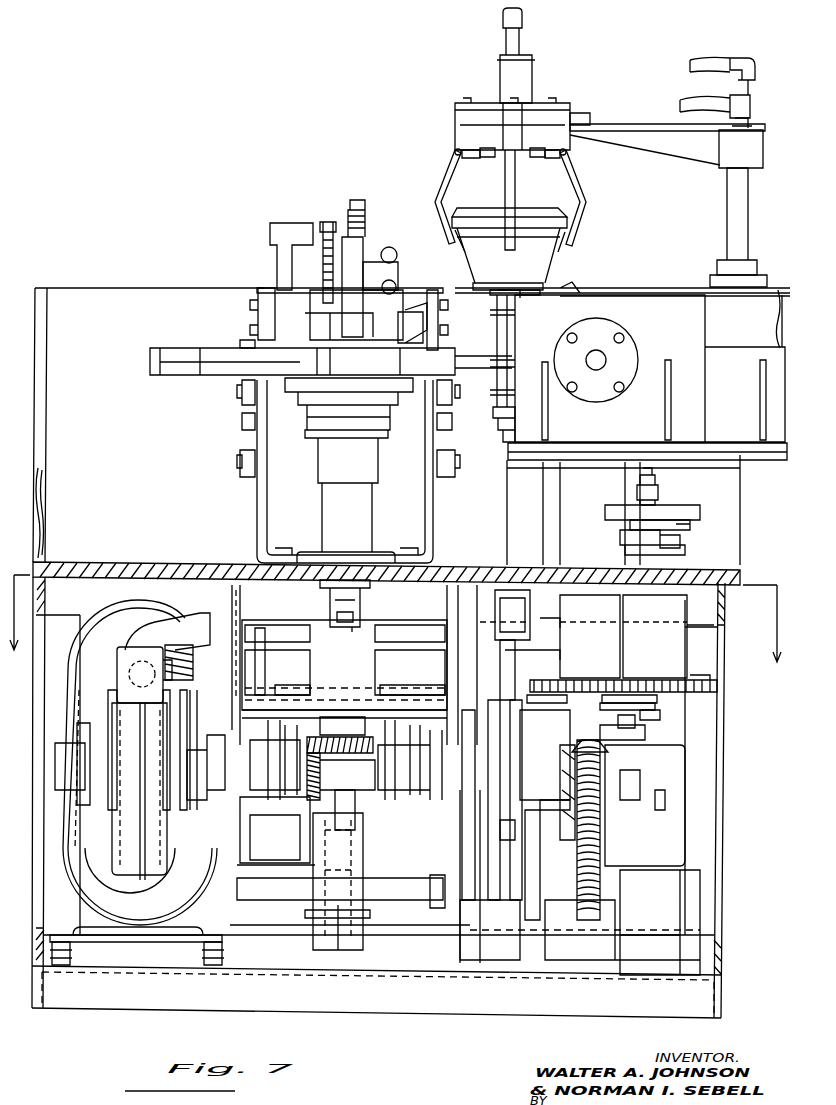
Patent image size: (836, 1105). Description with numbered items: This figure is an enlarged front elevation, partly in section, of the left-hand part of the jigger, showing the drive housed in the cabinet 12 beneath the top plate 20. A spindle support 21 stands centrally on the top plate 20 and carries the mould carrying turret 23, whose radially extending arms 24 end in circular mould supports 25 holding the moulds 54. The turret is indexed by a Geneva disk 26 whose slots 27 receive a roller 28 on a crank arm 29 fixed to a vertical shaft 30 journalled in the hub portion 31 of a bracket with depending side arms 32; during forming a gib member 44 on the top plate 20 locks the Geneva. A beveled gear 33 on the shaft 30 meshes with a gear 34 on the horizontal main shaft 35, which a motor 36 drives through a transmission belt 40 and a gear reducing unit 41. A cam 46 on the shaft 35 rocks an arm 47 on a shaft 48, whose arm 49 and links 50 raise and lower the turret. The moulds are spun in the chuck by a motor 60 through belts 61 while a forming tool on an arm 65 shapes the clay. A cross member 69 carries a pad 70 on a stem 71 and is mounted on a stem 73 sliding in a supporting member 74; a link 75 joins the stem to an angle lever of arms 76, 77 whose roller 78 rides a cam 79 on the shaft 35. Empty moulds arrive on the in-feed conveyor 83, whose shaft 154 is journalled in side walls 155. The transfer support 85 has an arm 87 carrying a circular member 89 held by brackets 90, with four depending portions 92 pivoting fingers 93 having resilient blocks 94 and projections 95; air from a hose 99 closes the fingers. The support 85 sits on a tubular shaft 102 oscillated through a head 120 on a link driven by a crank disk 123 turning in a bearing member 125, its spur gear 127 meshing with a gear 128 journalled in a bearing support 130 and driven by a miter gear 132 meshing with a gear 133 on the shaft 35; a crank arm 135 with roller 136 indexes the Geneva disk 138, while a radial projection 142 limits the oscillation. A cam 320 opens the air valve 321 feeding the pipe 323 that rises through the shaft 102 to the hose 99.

The machine housing 12 is at (393, 796).
The top plate 20 is at (216, 560).
The spindle support 21 is at (348, 470).
The mould carrying turret 23 is at (336, 382).
The radially extending arms 24 is at (244, 348).
The circular mould supports 25 is at (150, 368).
The Geneva disk 26 is at (292, 682).
The slots 27 is at (412, 682).
The roller 28 is at (344, 627).
The crank arm 29 is at (361, 602).
The shaft 30 is at (346, 760).
The hub portion 31 is at (344, 665).
The side arms 32 is at (478, 662).
The beveled gear 33 is at (344, 731).
The gear 34 is at (275, 830).
The shaft 35 is at (226, 765).
The motor 36 is at (137, 906).
The transmission belt 40 is at (78, 808).
The gear reducing unit 41 is at (114, 674).
The gib member 44 is at (254, 658).
The cam 46 is at (480, 716).
The arm 47 is at (504, 864).
The shaft 48 is at (358, 876).
The arm 49 is at (361, 914).
The links 50 is at (362, 945).
The moulds 54 is at (509, 249).
The motor 60 is at (631, 830).
The belts 61 is at (548, 632).
The arm 65 is at (368, 252).
The cross member 69 is at (493, 415).
The pad 70 is at (490, 290).
The stem 71 is at (505, 332).
The stem 73 is at (550, 654).
The supporting member 74 is at (505, 615).
The link 75 is at (506, 682).
The arm 76 is at (495, 914).
The arm 77 is at (538, 841).
The roller 78 is at (555, 802).
The cam 79 is at (516, 729).
The in-feed conveyor 83 is at (678, 284).
The cross member support 85 is at (741, 149).
The arm 87 is at (604, 125).
The circular shaped member 89 is at (456, 123).
The brackets 90 is at (576, 115).
The depending portions 92 is at (565, 144).
The fingers 93 is at (576, 186).
The blocks 94 is at (565, 244).
The projections 95 is at (526, 153).
The hose 99 is at (682, 88).
The tubular shaft 102 is at (727, 212).
The head 120 is at (658, 482).
The crank disk 123 is at (680, 516).
The bearing member 125 is at (668, 636).
The spur gear 127 is at (703, 670).
The gear 128 is at (563, 676).
The bearing support 130 is at (590, 636).
The miter gear 132 is at (598, 752).
The gear 133 is at (560, 760).
The crank arm 135 is at (618, 724).
The roller 136 is at (641, 712).
The Geneva disk 138 is at (655, 700).
The radial projection 142 is at (762, 276).
The shaft 154 is at (596, 360).
The side walls 155 is at (622, 371).
The cam 320 is at (664, 542).
The air valve 321 is at (669, 527).
The pipe 323 is at (752, 120).